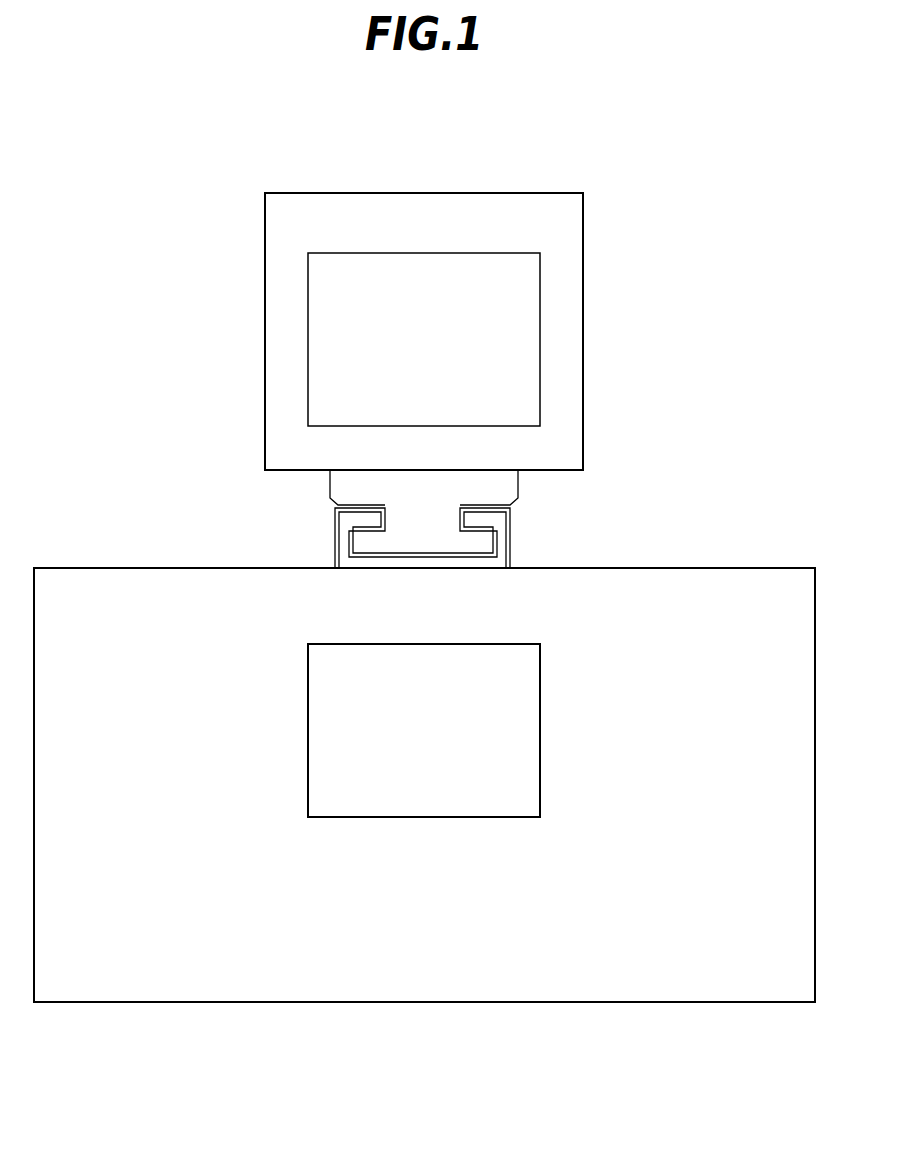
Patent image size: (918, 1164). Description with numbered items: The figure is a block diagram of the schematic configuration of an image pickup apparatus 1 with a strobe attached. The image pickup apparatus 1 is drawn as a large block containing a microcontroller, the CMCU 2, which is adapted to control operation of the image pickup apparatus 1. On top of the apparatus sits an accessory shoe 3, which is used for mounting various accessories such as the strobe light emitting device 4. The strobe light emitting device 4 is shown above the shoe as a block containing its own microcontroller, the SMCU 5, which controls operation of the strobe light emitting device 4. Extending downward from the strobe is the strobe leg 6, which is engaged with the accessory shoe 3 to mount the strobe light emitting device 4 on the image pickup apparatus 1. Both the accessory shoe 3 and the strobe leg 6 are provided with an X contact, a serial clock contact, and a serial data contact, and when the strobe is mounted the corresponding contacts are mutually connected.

The image pickup apparatus 1 is at (735, 568).
The microcontroller (CMCU) 2 is at (540, 667).
The accessory shoe 3 is at (510, 535).
The strobe light emitting device 4 is at (538, 192).
The microcontroller (SMCU) 5 is at (540, 285).
The strobe leg 6 is at (330, 490).